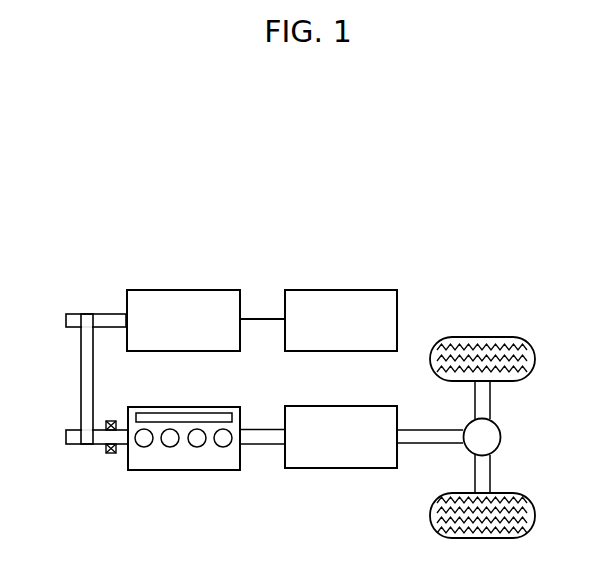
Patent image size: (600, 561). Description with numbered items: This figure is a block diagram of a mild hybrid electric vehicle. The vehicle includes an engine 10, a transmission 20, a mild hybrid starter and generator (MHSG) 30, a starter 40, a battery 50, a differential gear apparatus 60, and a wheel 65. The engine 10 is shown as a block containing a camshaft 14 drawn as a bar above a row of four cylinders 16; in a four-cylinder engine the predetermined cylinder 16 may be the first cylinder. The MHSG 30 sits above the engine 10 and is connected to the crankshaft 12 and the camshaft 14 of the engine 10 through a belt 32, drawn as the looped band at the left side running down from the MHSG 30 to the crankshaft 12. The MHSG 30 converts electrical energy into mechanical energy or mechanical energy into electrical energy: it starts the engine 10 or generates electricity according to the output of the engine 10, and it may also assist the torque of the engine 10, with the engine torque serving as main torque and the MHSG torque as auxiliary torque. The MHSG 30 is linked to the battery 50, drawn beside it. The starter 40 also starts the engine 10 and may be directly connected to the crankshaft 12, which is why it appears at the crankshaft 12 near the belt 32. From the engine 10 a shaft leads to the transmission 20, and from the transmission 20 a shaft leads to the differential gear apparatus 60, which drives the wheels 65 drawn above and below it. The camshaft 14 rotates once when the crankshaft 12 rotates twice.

The engine 10 is at (184, 454).
The crankshaft 12 is at (123, 420).
The camshaft 14 is at (183, 413).
The cylinder 16 is at (144, 448).
The transmission 20 is at (340, 469).
The mild hybrid starter & generator (MHSG) 30 is at (182, 290).
The belt 32 is at (80, 377).
The starter 40 is at (105, 453).
The battery 50 is at (339, 290).
The differential gear apparatus 60 is at (501, 436).
The wheel 65 is at (481, 336).